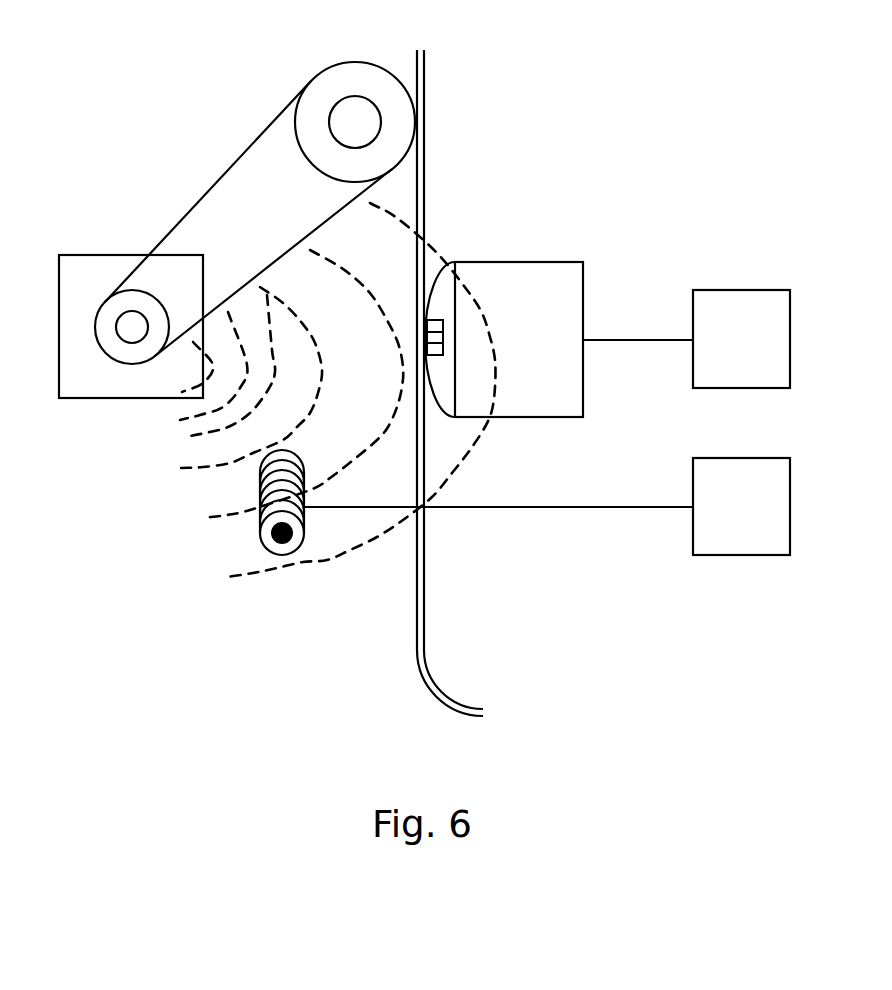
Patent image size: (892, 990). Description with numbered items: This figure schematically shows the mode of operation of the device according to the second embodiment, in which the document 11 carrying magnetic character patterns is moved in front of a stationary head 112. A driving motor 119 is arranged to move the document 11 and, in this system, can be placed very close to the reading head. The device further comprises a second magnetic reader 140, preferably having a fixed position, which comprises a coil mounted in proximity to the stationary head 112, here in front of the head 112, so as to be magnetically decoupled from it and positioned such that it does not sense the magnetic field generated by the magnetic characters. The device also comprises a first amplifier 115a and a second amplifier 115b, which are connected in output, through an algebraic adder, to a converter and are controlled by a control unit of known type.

The document 11 is at (424, 75).
The driving motor 119 is at (107, 255).
The stationary head 112 is at (540, 262).
The first amplifier 115a is at (743, 290).
The second amplifier 115b is at (718, 555).
The second magnetic reader 140 is at (260, 533).